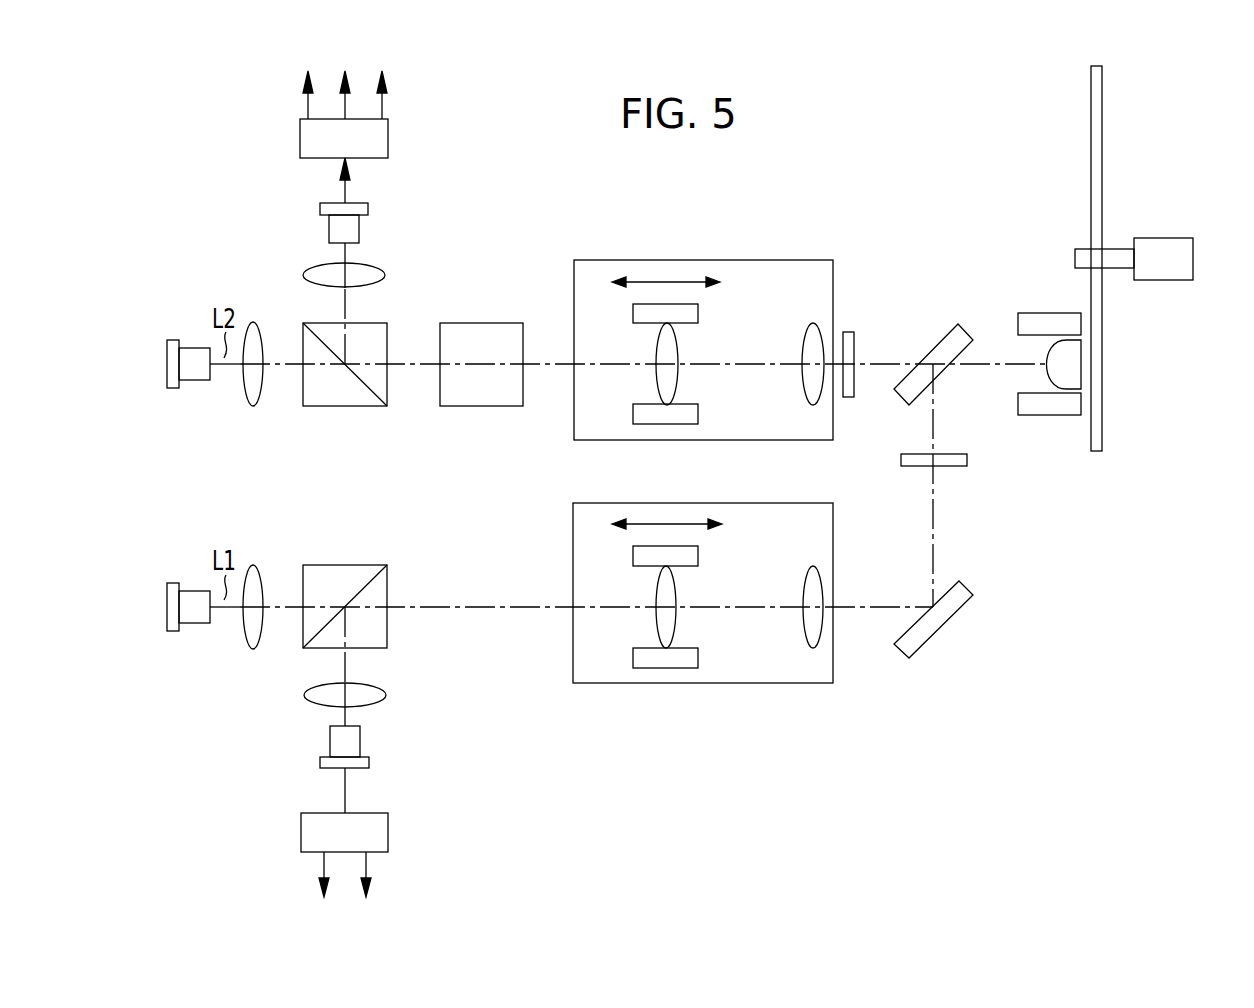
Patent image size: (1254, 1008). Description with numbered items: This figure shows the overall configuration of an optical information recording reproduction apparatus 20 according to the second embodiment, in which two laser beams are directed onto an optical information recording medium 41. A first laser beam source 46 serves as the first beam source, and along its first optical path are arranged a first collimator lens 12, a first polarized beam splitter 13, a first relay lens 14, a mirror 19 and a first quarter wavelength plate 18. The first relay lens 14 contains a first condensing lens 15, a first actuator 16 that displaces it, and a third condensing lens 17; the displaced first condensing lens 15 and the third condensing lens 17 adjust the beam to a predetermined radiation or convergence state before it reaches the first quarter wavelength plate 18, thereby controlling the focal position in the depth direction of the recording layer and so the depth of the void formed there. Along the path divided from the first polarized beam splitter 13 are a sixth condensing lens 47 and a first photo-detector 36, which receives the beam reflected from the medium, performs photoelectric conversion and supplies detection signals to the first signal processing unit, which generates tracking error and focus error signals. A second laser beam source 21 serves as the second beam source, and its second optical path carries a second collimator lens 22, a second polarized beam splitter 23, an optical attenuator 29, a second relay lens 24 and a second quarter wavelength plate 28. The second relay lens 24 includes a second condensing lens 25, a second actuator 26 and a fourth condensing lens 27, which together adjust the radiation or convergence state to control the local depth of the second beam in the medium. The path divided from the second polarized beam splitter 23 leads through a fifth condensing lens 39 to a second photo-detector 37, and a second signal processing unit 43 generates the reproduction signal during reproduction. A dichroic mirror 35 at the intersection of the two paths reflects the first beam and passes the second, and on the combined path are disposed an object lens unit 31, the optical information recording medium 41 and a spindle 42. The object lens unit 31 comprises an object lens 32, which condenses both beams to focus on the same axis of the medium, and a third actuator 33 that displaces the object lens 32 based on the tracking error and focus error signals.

The optical information recording reproduction apparatus 20 is at (122, 162).
The second laser beam source 21 is at (167, 363).
The second collimator lens 22 is at (248, 408).
The second polarized beam splitter 23 is at (370, 322).
The optical attenuator 29 is at (482, 322).
The second relay lens 24 is at (703, 328).
The second condensing lens 25 is at (657, 355).
The second actuator 26 is at (699, 317).
The fourth condensing lens 27 is at (803, 357).
The second quarter wavelength plate 28 is at (851, 333).
The dichroic mirror 35 is at (952, 327).
The first quarter wavelength plate 18 is at (943, 453).
The object lens unit 31 is at (1101, 361).
The object lens 32 is at (1094, 362).
The third actuator 33 is at (1082, 323).
The optical information recording medium 41 is at (1102, 97).
The spindle 42 is at (1193, 257).
The fifth condensing lens 39 is at (302, 275).
The second photo-detector 37 is at (359, 232).
The second signal processing unit 43 is at (388, 139).
The first laser beam source 46 is at (167, 605).
The first collimator lens 12 is at (248, 650).
The first polarized beam splitter 13 is at (370, 565).
The first relay lens 14 is at (703, 570).
The first condensing lens 15 is at (655, 600).
The first actuator 16 is at (698, 560).
The third condensing lens 17 is at (803, 598).
The mirror 19 is at (965, 582).
The sixth condensing lens 47 is at (385, 697).
The first photo-detector 36 is at (328, 752).